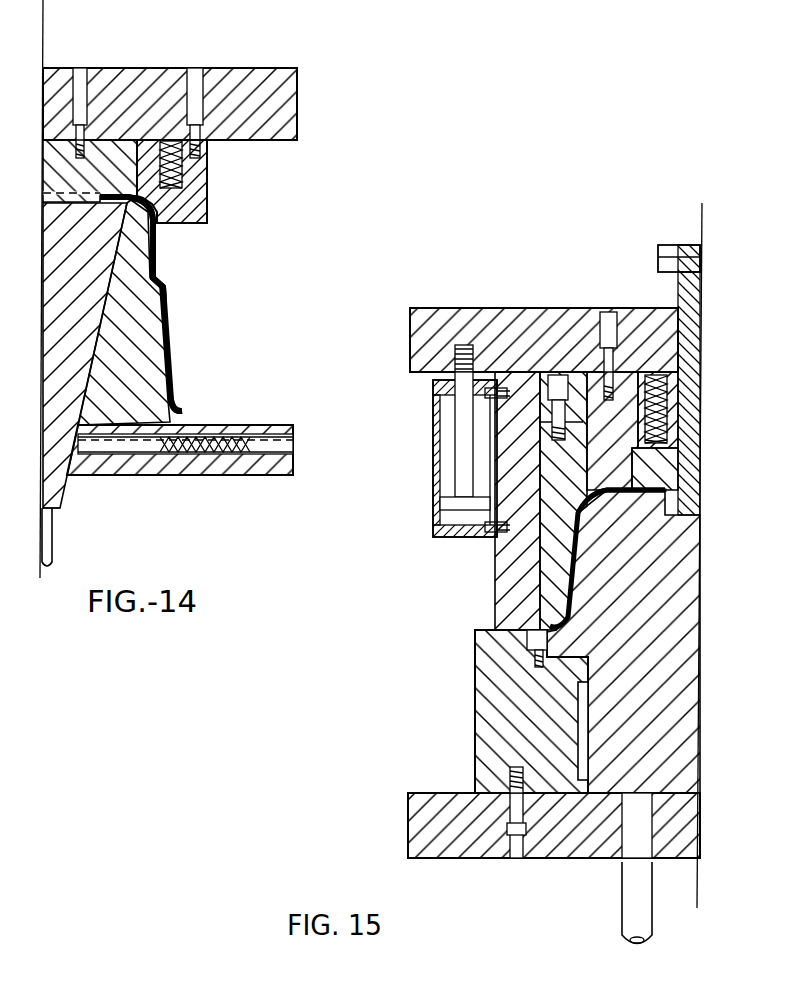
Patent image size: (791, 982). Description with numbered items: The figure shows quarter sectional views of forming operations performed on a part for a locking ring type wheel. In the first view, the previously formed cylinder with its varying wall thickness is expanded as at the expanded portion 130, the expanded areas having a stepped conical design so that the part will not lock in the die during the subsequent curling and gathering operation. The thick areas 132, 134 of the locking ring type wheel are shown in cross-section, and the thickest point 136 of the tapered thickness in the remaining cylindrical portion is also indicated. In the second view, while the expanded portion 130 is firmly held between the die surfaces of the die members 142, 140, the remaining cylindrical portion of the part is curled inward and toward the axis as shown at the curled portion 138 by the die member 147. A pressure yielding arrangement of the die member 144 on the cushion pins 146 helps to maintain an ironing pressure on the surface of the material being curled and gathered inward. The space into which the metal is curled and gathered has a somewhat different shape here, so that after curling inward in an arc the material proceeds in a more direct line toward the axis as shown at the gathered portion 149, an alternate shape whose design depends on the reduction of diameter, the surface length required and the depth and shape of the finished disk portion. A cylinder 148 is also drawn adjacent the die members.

In FIG. 14, the expanded portion 130 is at (173, 340).
In FIG. 15, the expanded portion 130 is at (573, 567).
In FIG. 14, the thick area 132 is at (179, 411).
In FIG. 14, the thick area 134 is at (166, 285).
In FIG. 14, the thickest point of tapered thickness 136 is at (158, 243).
In FIG. 15, the curled portion 138 is at (613, 497).
In FIG. 15, the die member 140 is at (550, 553).
In FIG. 15, the die member 142 is at (540, 667).
In FIG. 15, the die member 144 is at (670, 722).
In FIG. 15, the cushion pins 146 is at (635, 898).
In FIG. 15, the die member 147 is at (592, 382).
In FIG. 15, the cylinder 148 is at (453, 537).
In FIG. 15, the gathered portion 149 is at (650, 488).